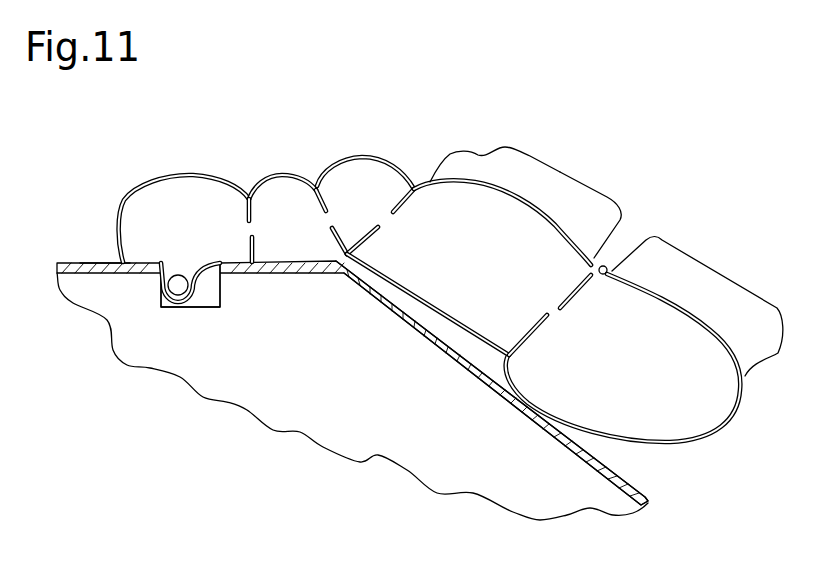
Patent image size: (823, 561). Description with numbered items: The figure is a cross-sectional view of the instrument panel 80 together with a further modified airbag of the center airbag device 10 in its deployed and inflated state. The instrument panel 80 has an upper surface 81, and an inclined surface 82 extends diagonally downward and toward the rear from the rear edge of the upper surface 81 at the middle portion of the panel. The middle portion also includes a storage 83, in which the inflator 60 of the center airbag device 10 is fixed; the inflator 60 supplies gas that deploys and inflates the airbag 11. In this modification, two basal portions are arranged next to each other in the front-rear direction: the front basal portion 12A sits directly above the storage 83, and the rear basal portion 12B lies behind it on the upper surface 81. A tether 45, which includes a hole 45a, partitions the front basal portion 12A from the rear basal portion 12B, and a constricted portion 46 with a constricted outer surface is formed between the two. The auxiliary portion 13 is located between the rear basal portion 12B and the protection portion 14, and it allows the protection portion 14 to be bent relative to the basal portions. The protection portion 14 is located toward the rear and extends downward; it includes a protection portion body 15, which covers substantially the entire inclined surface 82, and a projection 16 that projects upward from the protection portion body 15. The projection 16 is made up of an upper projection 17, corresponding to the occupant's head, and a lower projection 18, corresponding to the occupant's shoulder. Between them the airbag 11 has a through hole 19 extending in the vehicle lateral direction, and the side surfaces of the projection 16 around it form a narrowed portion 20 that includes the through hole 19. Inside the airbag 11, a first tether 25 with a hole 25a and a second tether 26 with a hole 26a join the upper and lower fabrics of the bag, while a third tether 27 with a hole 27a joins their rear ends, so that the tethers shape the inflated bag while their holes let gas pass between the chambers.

The center airbag device 10 is at (137, 128).
The airbag 11 is at (307, 145).
The front basal portion 12A is at (197, 172).
The rear basal portion 12B is at (281, 173).
The auxiliary portion 13 is at (360, 156).
The protection portion 14 is at (565, 270).
The protection portion body 15 is at (500, 189).
The projection 16 is at (707, 150).
The upper projection 17 is at (612, 199).
The lower projection 18 is at (702, 258).
The through hole 19 is at (606, 278).
The narrowed portion 20 is at (636, 265).
The first tether 25 is at (317, 207).
The hole 25a is at (330, 229).
The second tether 26 is at (407, 200).
The hole 26a is at (384, 232).
The third tether 27 is at (578, 280).
The hole 27a is at (546, 313).
The tether 45 is at (246, 215).
The hole 45a is at (248, 238).
The constricted portion 46 is at (242, 183).
The inflator 60 is at (178, 298).
The instrument panel 80 is at (60, 253).
The upper surface 81 is at (105, 263).
The inclined surface 82 is at (485, 360).
The storage 83 is at (202, 305).